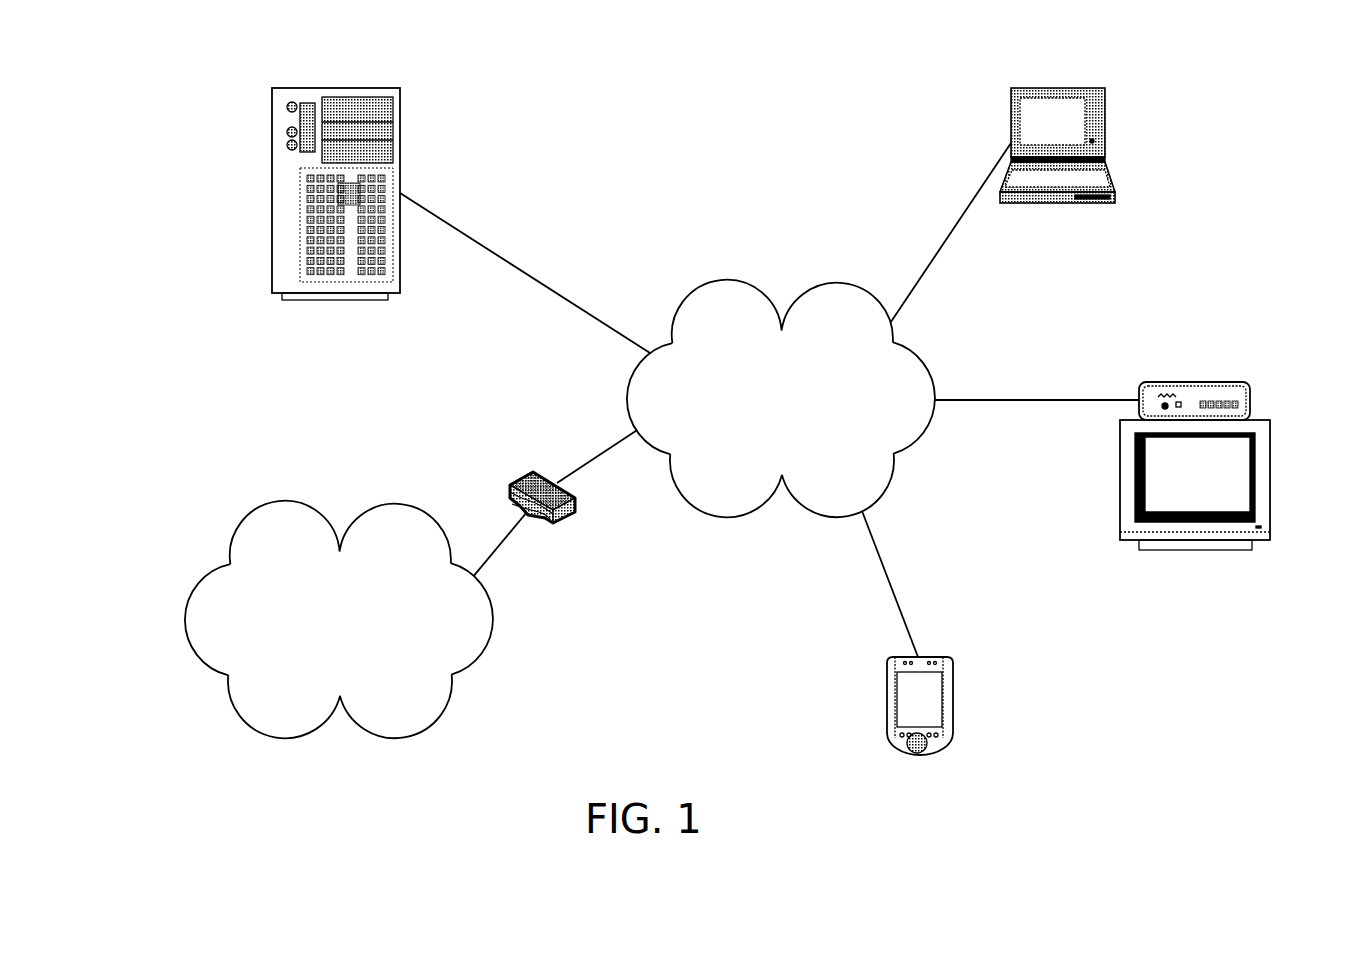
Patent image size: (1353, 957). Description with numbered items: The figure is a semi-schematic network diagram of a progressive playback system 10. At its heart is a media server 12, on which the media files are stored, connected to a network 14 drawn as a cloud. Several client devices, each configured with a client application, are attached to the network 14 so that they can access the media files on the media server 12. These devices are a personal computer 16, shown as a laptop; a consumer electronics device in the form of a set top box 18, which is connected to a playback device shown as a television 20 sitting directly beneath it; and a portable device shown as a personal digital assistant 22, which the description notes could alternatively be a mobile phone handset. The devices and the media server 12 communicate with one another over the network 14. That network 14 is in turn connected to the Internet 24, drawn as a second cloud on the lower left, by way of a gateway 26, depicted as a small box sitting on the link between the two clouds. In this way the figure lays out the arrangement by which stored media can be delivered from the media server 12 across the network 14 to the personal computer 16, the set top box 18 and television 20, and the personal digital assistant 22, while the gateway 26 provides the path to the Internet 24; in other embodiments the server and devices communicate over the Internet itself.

The progressive playback system 10 is at (478, 747).
The media server 12 is at (272, 153).
The network 14 is at (706, 286).
The personal computer 16 is at (1107, 145).
The set top box 18 is at (1208, 382).
The television 20 is at (1230, 550).
The personal digital assistant 22 is at (952, 707).
The Internet 24 is at (295, 503).
The gateway 26 is at (517, 480).